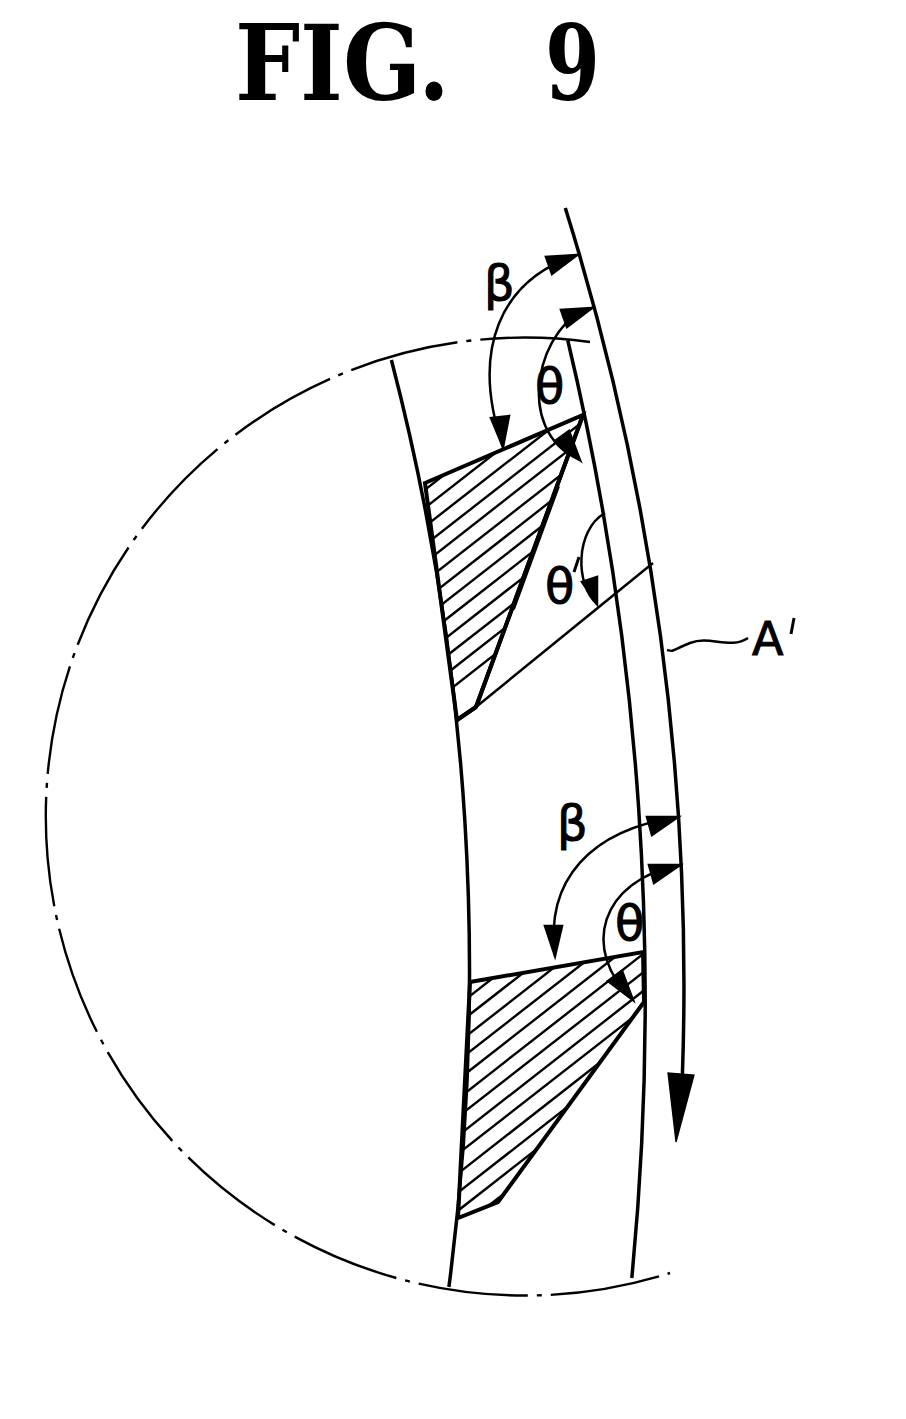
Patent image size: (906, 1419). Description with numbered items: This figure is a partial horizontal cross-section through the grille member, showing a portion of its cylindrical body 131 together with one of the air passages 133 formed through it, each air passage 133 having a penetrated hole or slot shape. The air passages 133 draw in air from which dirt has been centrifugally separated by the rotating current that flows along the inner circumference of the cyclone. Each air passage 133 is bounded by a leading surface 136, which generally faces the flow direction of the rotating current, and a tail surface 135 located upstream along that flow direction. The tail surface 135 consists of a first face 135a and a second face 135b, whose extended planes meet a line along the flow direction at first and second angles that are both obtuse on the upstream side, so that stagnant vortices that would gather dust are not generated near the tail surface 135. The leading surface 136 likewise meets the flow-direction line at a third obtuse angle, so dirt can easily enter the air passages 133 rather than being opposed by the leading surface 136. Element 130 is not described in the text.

The rotating body 130 is at (408, 656).
The cylindrical body 131 is at (447, 572).
The air passage 133 is at (482, 845).
The tail surface 135 is at (616, 508).
The first face 135a is at (513, 633).
The second face 135b is at (470, 712).
The leading surface 136 is at (537, 972).